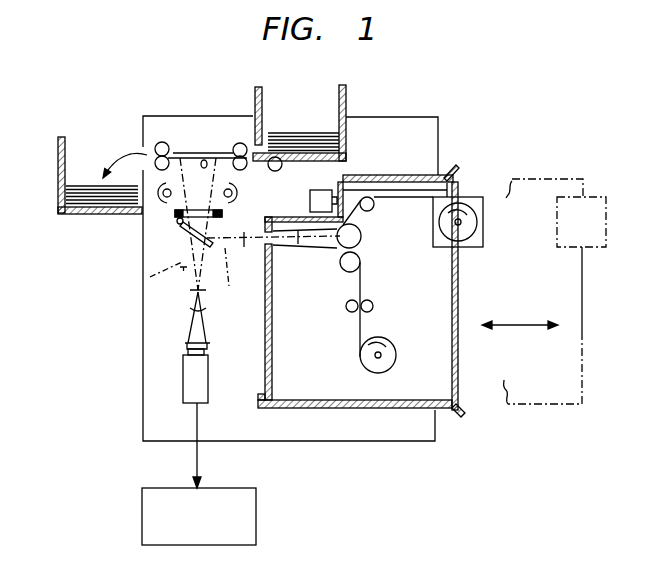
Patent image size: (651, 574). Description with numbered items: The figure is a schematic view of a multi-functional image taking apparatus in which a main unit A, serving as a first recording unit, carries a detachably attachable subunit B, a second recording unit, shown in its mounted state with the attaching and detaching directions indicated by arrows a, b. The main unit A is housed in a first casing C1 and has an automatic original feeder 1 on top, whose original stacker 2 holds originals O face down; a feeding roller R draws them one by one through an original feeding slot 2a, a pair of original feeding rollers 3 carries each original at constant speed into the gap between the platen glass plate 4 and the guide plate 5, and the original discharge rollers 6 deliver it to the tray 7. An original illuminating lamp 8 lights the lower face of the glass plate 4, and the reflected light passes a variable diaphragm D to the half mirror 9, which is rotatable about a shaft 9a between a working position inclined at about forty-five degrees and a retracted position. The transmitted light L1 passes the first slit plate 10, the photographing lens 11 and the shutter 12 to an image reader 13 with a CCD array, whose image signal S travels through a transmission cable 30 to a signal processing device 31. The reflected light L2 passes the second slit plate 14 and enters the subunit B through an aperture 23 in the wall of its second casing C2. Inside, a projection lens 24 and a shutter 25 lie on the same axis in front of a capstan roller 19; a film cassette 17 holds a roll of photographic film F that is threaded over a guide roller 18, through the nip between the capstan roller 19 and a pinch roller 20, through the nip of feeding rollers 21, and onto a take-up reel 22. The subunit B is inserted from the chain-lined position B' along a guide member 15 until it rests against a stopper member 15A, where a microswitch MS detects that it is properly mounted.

The automatic original feeder 1 is at (200, 116).
The original stacker 2 is at (312, 121).
The original feeding slot 2a is at (253, 143).
The original feeding rollers 3 is at (235, 144).
The platen glass plate 4 is at (205, 160).
The guide plate 5 is at (192, 152).
The original discharge rollers 6 is at (161, 143).
The tray 7 is at (58, 148).
The original illuminating lamp 8 is at (160, 202).
The half mirror 9 is at (188, 240).
The shaft 9a is at (177, 225).
The first slit plate 10 is at (191, 292).
The photographing lens 11 is at (208, 304).
The shutter 12 is at (210, 343).
The image reader 13 is at (209, 372).
The second slit plate 14 is at (249, 242).
The guide member 15 is at (439, 168).
The stopper member 15A is at (259, 409).
The film cassette 17 is at (484, 211).
The guide roller 18 is at (374, 207).
The capstan roller 19 is at (362, 238).
The pinch roller 20 is at (352, 276).
The feeding rollers 21 is at (371, 304).
The take-up reel 22 is at (397, 360).
The aperture 23 is at (281, 243).
The projection lens 24 is at (284, 228).
The shutter 25 is at (341, 256).
The transmission cable 30 is at (196, 458).
The signal processing device 31 is at (257, 501).
The main unit A is at (382, 116).
The subunit B is at (464, 158).
The chain-lined position of subunit B' is at (537, 151).
The first casing C1 is at (141, 362).
The second casing C2 is at (459, 389).
The variable diaphragm D is at (170, 215).
The photographic film F is at (346, 203).
The transmitted light L1 is at (173, 225).
The reflected light L2 is at (206, 270).
The microswitch MS is at (330, 188).
The originals O is at (288, 135).
The feeding roller R is at (271, 169).
The image signal S is at (203, 445).
The arrow a is at (518, 315).
The arrow b is at (552, 313).